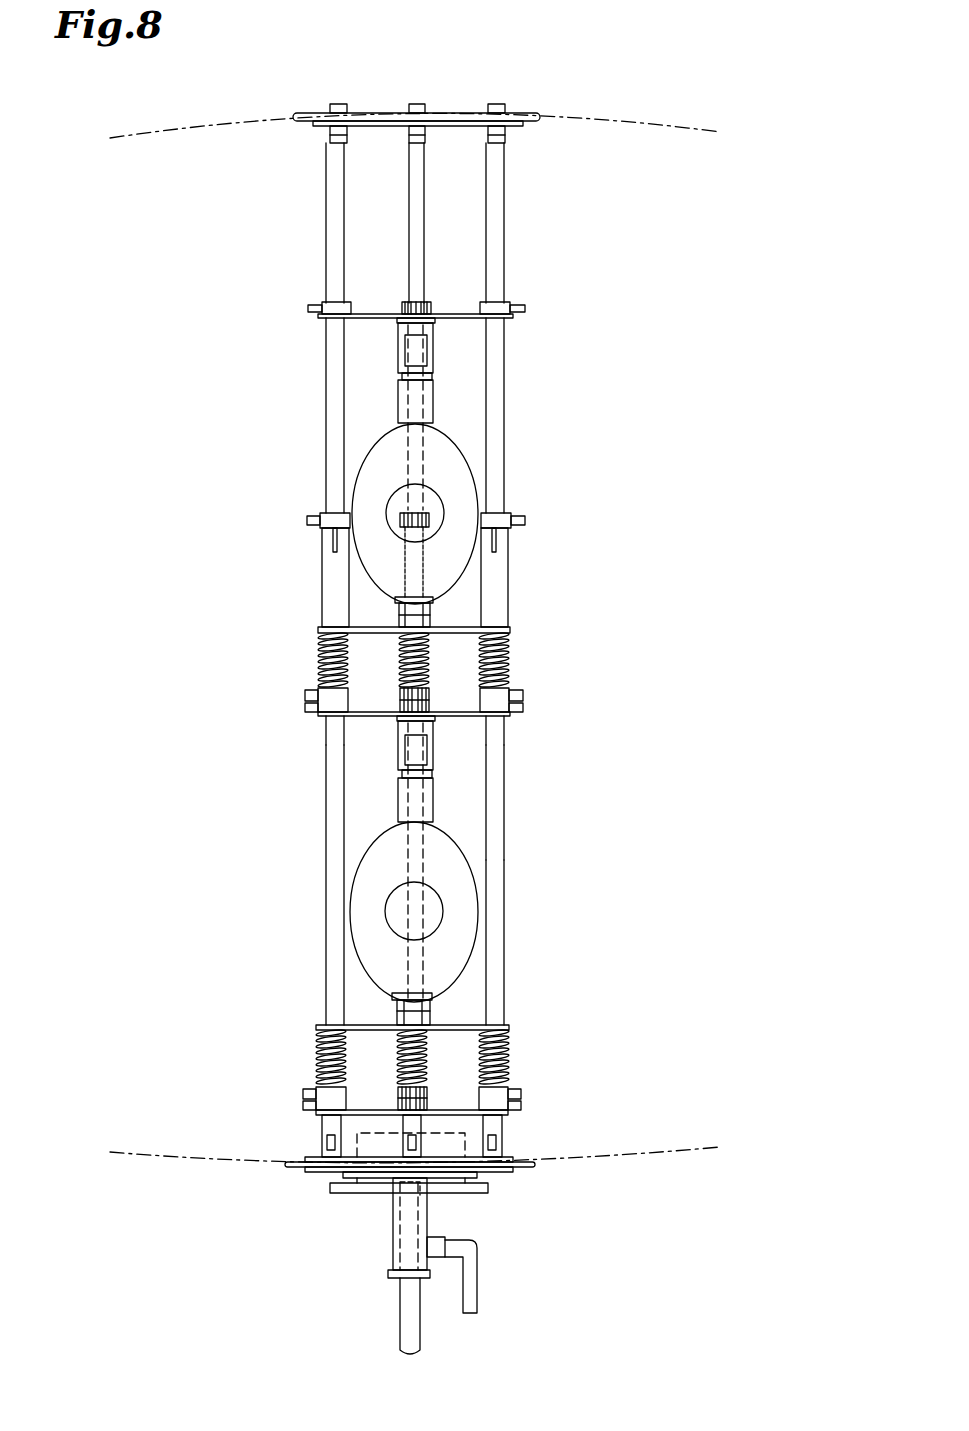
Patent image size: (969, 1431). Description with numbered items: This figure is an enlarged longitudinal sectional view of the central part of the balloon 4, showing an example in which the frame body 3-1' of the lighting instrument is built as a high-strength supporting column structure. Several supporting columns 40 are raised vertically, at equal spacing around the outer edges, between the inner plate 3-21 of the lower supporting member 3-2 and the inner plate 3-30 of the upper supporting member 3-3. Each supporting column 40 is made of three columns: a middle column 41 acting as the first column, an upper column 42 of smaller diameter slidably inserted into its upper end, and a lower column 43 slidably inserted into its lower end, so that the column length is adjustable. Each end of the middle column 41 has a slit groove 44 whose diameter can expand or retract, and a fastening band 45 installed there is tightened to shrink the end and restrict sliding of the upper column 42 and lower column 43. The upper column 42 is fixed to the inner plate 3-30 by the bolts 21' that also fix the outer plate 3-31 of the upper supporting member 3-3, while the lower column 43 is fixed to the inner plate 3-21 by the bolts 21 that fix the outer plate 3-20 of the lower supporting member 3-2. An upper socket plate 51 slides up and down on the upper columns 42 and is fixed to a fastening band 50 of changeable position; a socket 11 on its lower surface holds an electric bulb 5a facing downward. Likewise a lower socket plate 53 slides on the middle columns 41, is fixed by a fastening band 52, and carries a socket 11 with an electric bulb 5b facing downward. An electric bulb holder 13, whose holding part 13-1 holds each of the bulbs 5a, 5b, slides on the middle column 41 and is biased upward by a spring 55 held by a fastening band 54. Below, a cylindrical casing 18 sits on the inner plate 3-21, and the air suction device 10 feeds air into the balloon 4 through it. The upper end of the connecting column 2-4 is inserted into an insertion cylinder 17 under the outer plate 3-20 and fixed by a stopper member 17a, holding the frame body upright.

The balloon 4 is at (188, 114).
The upper supporting member 3-3 is at (316, 110).
The outer plate 3-31 is at (541, 114).
The inner plate 3-30 is at (515, 127).
The bolts 21' is at (417, 92).
The upper column 42 is at (530, 235).
The frame body 3-1' is at (327, 346).
The fastening band 50 is at (333, 305).
The upper socket plate 51 is at (460, 314).
The socket 11 is at (433, 352).
The electric bulb 5a is at (460, 446).
The electric bulb 5b is at (460, 843).
The supporting column 40 is at (323, 428).
The middle column 41 is at (325, 856).
The fastening band 45 is at (325, 512).
The slit groove 44 is at (325, 546).
The holding part 13-1 is at (395, 620).
The electric bulb holder 13 is at (462, 627).
The spring 55 is at (506, 668).
The fastening band 54 is at (500, 697).
The lower socket plate 53 is at (455, 716).
The fastening band 52 is at (330, 713).
The air suction device 10 is at (500, 1148).
The lower column 43 is at (325, 1138).
The casing 18 is at (468, 1125).
The bolts 21 is at (404, 1206).
The inner plate 3-21 is at (300, 1164).
The outer plate 3-20 is at (330, 1171).
The lower supporting member 3-2 is at (512, 1182).
The insertion cylinder 17 is at (393, 1240).
The stopper member 17a is at (477, 1278).
The connecting column 2-4 is at (420, 1333).